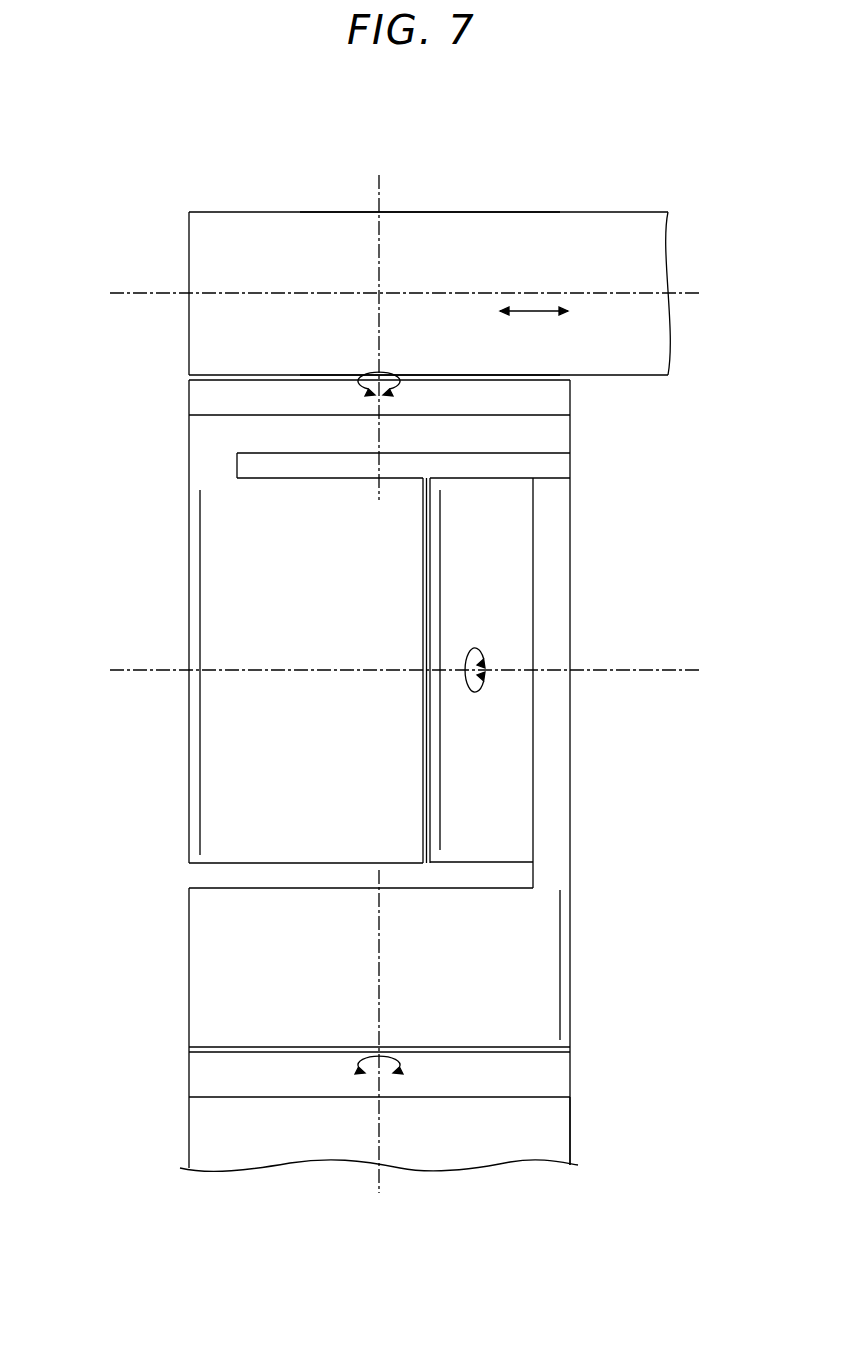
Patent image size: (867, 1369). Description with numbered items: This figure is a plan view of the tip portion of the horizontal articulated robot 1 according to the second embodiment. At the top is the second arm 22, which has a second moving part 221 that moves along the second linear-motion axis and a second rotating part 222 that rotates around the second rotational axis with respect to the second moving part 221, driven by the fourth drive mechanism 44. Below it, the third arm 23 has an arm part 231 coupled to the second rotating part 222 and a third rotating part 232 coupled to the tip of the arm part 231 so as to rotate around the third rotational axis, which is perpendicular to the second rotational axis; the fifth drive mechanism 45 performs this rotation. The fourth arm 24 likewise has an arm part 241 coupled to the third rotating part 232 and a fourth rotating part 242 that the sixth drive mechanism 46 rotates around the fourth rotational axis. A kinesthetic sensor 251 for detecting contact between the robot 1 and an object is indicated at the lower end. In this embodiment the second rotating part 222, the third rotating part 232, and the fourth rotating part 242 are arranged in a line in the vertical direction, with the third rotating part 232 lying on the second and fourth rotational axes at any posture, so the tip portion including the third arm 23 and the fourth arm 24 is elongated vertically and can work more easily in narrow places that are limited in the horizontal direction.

The robot 1 is at (192, 183).
The second arm 22 is at (558, 210).
The second moving part 221 is at (484, 255).
The second rotating part 222 is at (270, 405).
The third arm 23 is at (187, 568).
The arm part 231 is at (255, 515).
The third rotating part 232 is at (503, 525).
The fourth arm 24 is at (571, 810).
The arm part 241 is at (530, 935).
The fourth rotating part 242 is at (210, 1072).
The kinesthetic sensor 251 is at (243, 1135).
The fourth drive mechanism 44 is at (330, 375).
The fifth drive mechanism 45 is at (420, 750).
The sixth drive mechanism 46 is at (467, 1050).